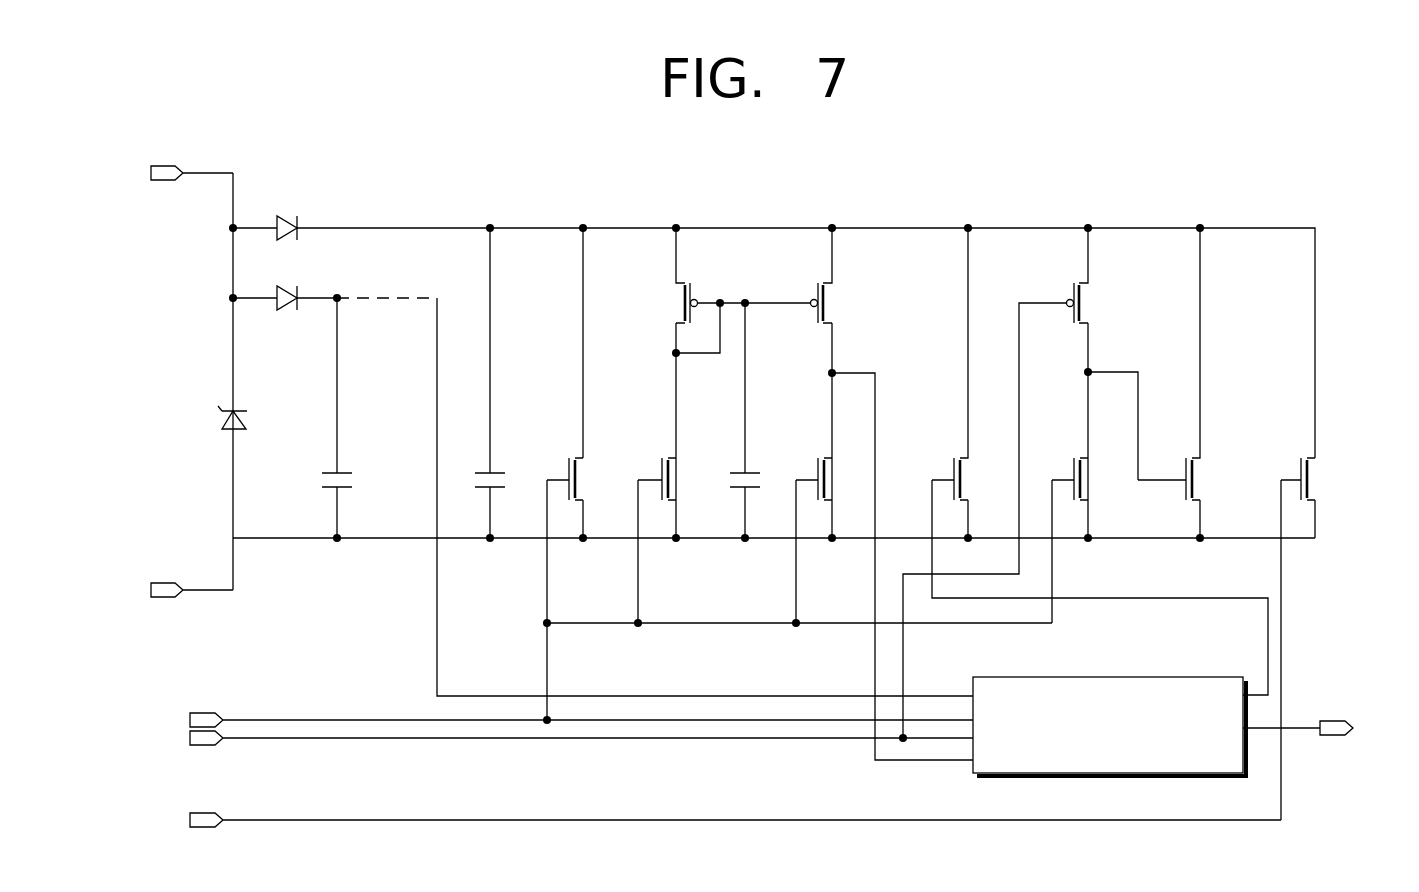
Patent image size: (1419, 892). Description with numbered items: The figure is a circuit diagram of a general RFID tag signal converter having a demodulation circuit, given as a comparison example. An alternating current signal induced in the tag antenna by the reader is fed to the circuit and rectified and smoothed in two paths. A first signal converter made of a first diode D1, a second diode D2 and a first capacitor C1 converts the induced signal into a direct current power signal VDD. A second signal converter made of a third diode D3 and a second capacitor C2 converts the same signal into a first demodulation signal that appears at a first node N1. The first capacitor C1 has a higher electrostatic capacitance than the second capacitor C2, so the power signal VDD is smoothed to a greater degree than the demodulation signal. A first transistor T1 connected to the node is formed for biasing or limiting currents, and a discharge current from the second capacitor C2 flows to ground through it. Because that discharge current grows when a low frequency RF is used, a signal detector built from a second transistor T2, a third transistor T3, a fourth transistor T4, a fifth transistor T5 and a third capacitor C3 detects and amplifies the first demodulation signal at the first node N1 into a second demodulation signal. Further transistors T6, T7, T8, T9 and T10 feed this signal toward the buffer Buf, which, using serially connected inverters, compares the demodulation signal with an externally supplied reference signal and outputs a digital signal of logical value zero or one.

The first diode D1 is at (248, 419).
The second diode D2 is at (285, 311).
The third diode D3 is at (267, 241).
The first capacitor C1 is at (353, 418).
The second capacitor C2 is at (504, 383).
The third capacitor C3 is at (760, 420).
The first transistor T1 is at (579, 589).
The second transistor T2 is at (729, 383).
The third transistor T3 is at (670, 540).
The fourth transistor T4 is at (835, 383).
The fifth transistor T5 is at (799, 540).
The transistor T6 is at (1100, 461).
The transistor T7 is at (1020, 483).
The transistor T8 is at (1084, 540).
The transistor T9 is at (1182, 383).
The transistor T10 is at (1316, 639).
The buffer Buf is at (1146, 726).
The power signal VDD is at (655, 485).
The first node N1 is at (584, 330).